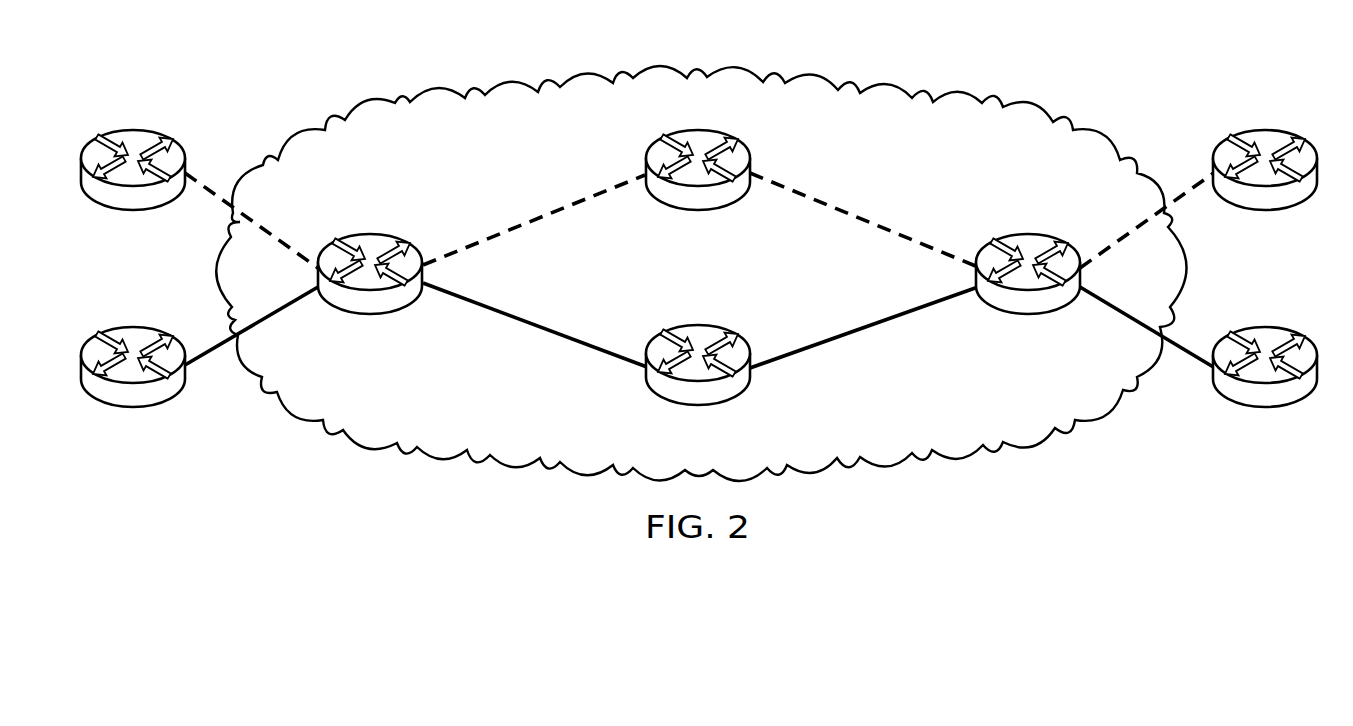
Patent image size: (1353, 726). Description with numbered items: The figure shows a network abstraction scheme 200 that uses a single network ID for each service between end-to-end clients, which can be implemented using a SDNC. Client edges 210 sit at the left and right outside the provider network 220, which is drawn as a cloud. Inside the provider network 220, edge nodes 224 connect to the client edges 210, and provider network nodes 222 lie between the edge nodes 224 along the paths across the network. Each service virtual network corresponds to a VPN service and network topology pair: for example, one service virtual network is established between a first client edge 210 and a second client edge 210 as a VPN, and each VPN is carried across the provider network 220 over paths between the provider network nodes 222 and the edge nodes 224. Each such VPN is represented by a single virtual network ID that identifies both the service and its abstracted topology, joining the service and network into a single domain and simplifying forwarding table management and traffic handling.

The network abstraction scheme 200 is at (700, 253).
The client edge 210 is at (700, 271).
The provider network (cloud) 220 is at (890, 78).
The provider network node 222 is at (690, 271).
The edge node 224 is at (701, 254).